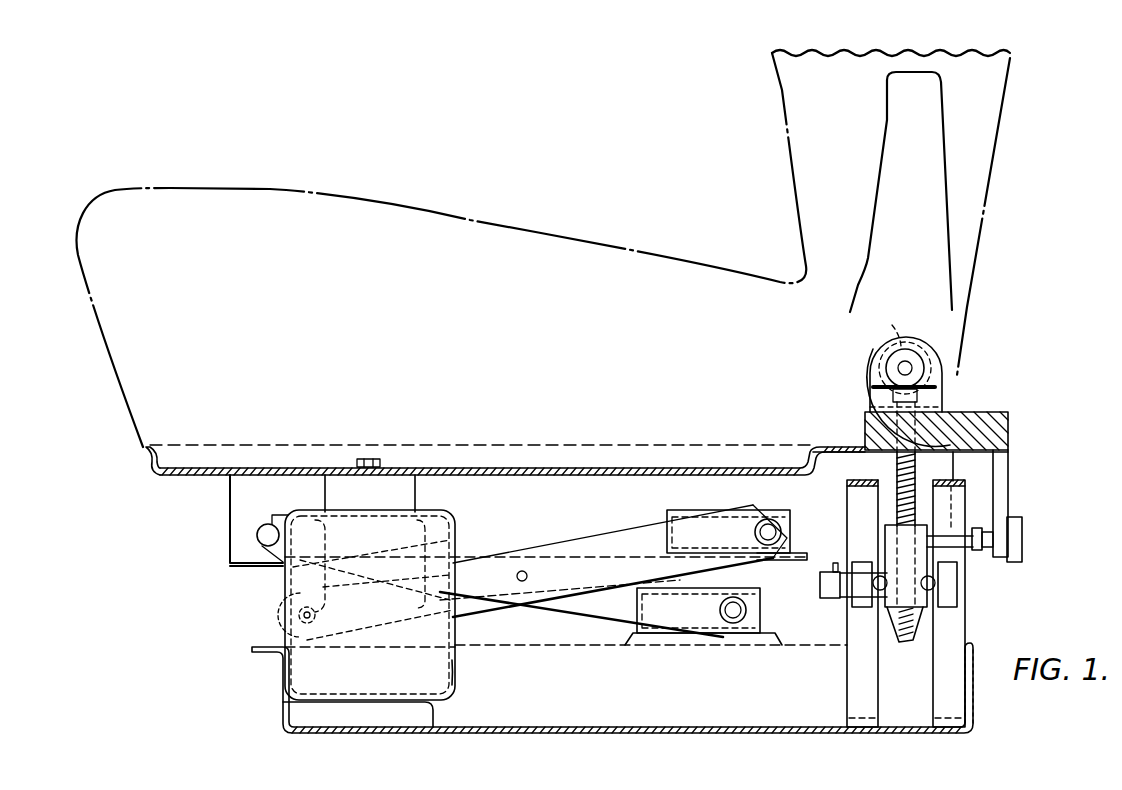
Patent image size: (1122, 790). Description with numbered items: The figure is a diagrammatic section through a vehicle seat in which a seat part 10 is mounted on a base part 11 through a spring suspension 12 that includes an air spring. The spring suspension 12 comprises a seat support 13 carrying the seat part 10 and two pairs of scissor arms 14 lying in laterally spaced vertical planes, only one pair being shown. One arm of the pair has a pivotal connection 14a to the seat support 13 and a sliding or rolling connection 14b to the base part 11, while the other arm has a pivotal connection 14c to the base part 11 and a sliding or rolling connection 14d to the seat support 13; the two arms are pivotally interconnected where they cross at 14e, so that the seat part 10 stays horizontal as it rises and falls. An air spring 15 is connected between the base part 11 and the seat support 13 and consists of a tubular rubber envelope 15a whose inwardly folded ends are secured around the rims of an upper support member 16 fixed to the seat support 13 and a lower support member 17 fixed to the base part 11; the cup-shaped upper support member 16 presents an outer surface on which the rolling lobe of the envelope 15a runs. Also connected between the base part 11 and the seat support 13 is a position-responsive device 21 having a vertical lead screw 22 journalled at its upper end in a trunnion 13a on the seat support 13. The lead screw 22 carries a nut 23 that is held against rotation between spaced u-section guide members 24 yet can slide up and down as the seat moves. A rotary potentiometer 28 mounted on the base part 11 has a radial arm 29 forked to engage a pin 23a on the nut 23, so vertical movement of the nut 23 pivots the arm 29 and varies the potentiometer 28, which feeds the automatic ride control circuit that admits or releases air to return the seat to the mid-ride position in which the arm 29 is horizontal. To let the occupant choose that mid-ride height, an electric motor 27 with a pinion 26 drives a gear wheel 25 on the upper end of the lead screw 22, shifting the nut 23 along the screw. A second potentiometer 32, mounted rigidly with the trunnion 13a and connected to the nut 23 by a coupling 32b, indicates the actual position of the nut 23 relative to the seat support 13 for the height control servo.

The seat part 10 is at (759, 126).
The base part 11 is at (271, 667).
The spring suspension 12 is at (612, 503).
The seat support 13 is at (229, 485).
The trunnion 13a is at (945, 427).
The scissor arms 14 is at (549, 572).
The pivotal connection 14a is at (257, 537).
The sliding or rolling connection 14b is at (742, 626).
The pivotal connection 14c is at (300, 615).
The sliding or rolling connection 14d is at (790, 528).
The intersection pivot 14e is at (524, 582).
The air spring 15 is at (457, 532).
The tubular rubber envelope 15a is at (456, 672).
The upper support member 16 is at (395, 483).
The lower support member 17 is at (415, 717).
The position-responsive device 21 is at (950, 470).
The lead screw 22 is at (918, 526).
The nut 23 is at (893, 545).
The pin 23a is at (913, 640).
The u-section guide members 24 is at (862, 677).
The gear wheel 25 is at (873, 386).
The pinion 26 is at (893, 358).
The electric motor 27 is at (893, 322).
The potentiometer 28 is at (820, 586).
The radial arm 29 is at (836, 600).
The potentiometer 32 is at (1014, 540).
The coupling 32b is at (975, 550).